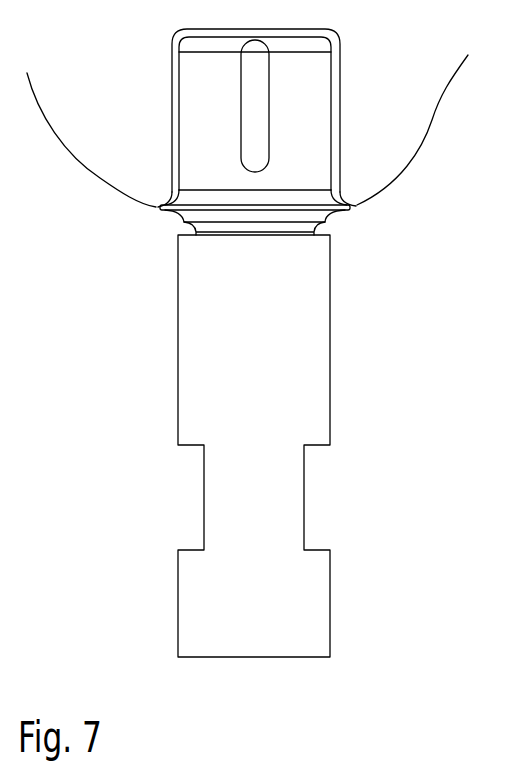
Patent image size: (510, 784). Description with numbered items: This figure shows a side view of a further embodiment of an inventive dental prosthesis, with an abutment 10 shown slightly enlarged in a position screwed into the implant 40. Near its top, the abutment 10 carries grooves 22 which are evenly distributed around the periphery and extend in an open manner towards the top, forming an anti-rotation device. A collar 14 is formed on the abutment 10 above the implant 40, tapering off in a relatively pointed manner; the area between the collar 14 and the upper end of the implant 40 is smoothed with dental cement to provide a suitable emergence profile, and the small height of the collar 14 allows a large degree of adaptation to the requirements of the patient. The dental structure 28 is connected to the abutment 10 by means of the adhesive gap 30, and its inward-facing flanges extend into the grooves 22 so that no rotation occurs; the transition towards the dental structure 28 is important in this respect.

The abutment 10 is at (200, 118).
The collar 14 is at (163, 210).
The grooves 22 is at (253, 82).
The dental structure 28 is at (388, 155).
The adhesive gap 30 is at (340, 73).
The implant 40 is at (315, 380).